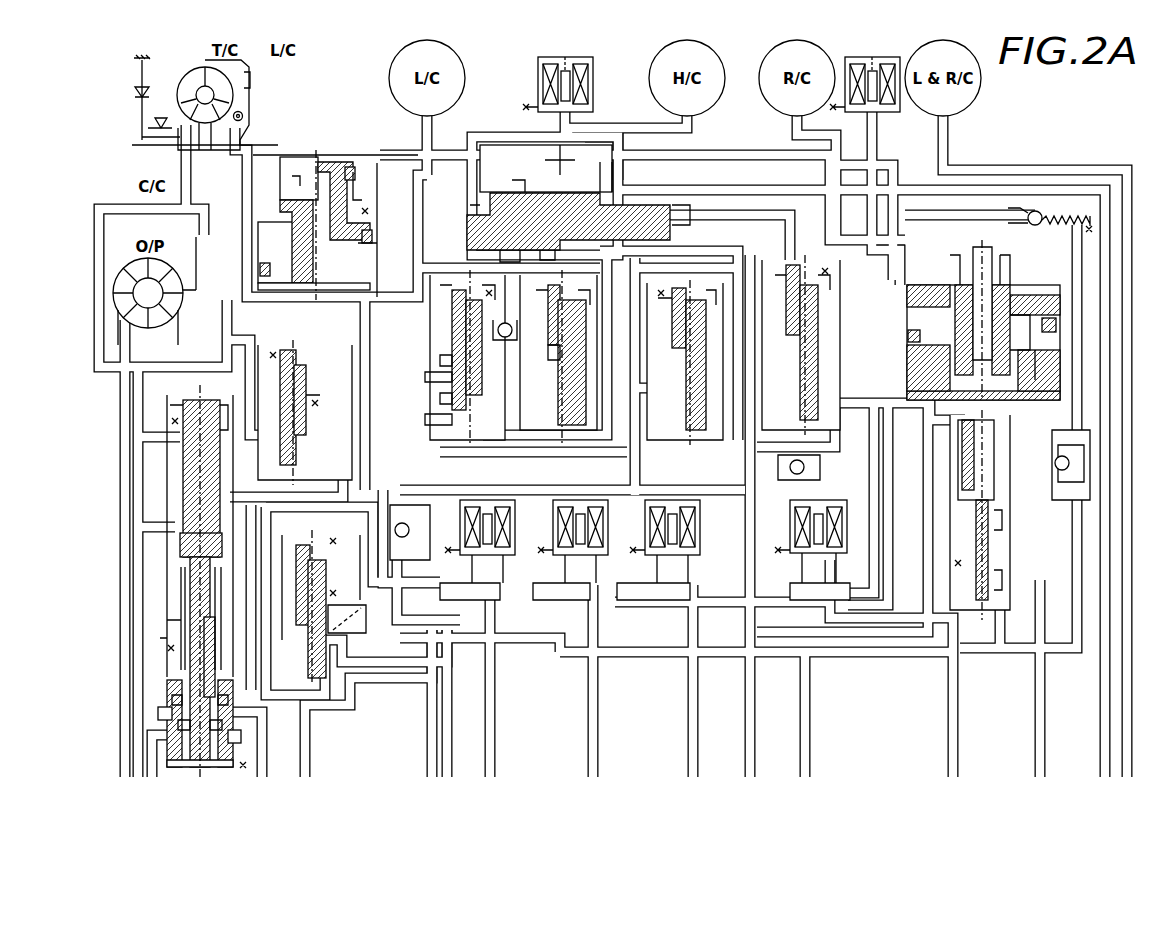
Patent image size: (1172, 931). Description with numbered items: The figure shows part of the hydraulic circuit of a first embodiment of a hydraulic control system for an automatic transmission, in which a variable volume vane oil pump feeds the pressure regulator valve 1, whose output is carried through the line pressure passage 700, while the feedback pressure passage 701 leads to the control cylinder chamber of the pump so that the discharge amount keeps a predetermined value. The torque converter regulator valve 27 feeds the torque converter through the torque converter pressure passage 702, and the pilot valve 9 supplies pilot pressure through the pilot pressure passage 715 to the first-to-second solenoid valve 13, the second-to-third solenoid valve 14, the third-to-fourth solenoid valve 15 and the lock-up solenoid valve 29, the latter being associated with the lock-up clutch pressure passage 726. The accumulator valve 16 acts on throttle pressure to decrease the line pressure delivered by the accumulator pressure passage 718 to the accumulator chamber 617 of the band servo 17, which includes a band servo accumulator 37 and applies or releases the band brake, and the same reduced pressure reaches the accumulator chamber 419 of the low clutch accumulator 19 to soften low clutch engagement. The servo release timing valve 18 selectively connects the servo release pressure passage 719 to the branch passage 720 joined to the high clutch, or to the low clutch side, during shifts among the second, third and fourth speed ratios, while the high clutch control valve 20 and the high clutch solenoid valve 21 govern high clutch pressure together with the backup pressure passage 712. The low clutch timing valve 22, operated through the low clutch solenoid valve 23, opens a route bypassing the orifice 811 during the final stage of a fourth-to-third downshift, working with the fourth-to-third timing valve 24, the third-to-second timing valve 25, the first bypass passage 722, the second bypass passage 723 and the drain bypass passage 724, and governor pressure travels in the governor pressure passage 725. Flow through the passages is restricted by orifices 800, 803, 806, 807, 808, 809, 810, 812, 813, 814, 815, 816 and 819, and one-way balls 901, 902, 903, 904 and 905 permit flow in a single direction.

The pressure regulator valve 1 is at (206, 381).
The pilot valve 9 is at (346, 566).
The 1-2 solenoid valve 13 is at (786, 535).
The 2-3 solenoid valve 14 is at (731, 530).
The 3-4 solenoid valve 15 is at (626, 530).
The accumulator valve 16 is at (1034, 434).
The band servo 17 is at (946, 266).
The servo release timing valve 18 is at (540, 300).
The low clutch accumulator 19 is at (350, 146).
The high clutch control valve 20 is at (456, 225).
The high clutch solenoid valve 21 is at (575, 55).
The low clutch timing valve 22 is at (668, 331).
The low clutch solenoid valve 23 is at (880, 55).
The 4-3 timing valve 24 is at (446, 301).
The 3-2 timing valve 25 is at (774, 301).
The torque converter regulator valve 27 is at (344, 360).
The lock-up solenoid valve 29 is at (544, 530).
The band servo accumulator 37 is at (1074, 363).
The accumulator chamber 419 is at (300, 168).
The accumulator chamber 617 is at (1052, 335).
The line pressure passage 700 is at (118, 612).
The feedback pressure passage 701 is at (94, 291).
The torque converter pressure passage 702 is at (230, 302).
The backup pressure passage 712 is at (620, 125).
The pilot pressure passage 715 is at (530, 632).
The accumulator pressure passage 718 is at (886, 530).
The servo release pressure passage 719 is at (930, 221).
The 3rd, 4th speed ratio branch passage 720 is at (845, 308).
The low clutch pressure first bypass passage 722 is at (628, 470).
The low clutch pressure second bypass passage 723 is at (442, 360).
The low clutch pressure drain bypass passage 724 is at (548, 358).
The governor pressure passage 725 is at (632, 650).
The lock-up clutch pressure passage 726 is at (441, 399).
The orifice 800 is at (165, 437).
The orifice 803 is at (775, 606).
The orifice 806 is at (622, 603).
The orifice 807 is at (528, 598).
The orifice 808 is at (1074, 494).
The orifice 809 is at (750, 448).
The orifice 810 is at (845, 405).
The orifice 811 is at (428, 520).
The orifice 812 is at (598, 138).
The orifice 813 is at (612, 185).
The orifice 814 is at (893, 160).
The orifice 815 is at (426, 377).
The orifice 816 is at (440, 420).
The orifice 819 is at (442, 592).
The one-way ball 901 is at (1029, 226).
The one-way ball 902 is at (1053, 457).
The one-way ball 903 is at (797, 478).
The one-way ball 904 is at (402, 521).
The one-way ball 905 is at (512, 330).